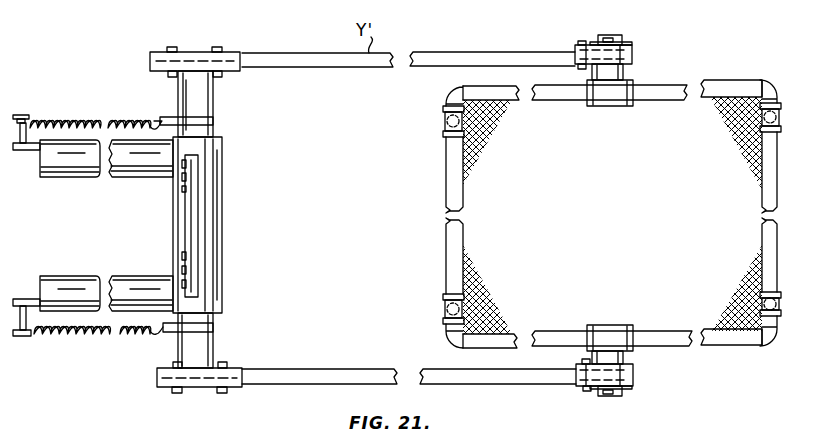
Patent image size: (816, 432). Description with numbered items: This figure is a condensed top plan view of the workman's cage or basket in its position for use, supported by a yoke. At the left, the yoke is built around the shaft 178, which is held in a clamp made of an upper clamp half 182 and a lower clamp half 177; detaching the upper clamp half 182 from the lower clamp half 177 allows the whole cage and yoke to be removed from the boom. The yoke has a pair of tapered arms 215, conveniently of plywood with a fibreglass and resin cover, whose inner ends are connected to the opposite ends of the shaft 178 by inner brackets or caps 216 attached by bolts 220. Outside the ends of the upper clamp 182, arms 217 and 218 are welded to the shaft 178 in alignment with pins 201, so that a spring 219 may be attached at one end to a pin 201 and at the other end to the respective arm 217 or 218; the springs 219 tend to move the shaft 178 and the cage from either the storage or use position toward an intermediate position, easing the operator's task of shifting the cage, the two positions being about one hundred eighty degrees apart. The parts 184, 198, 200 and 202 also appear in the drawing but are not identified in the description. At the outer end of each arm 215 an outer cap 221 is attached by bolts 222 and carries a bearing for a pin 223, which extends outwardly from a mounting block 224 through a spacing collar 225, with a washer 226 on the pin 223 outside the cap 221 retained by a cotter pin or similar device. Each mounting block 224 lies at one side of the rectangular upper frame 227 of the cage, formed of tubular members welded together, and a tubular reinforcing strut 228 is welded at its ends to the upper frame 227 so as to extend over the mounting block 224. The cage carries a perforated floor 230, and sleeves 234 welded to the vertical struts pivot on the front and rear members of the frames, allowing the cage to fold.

The lower clamp half 177 is at (177, 222).
The shaft 178 is at (214, 90).
The upper clamp half 182 is at (222, 186).
The slide member 184 is at (198, 222).
The cylinder 198 is at (152, 178).
The rod 200 is at (24, 151).
The pin 201 is at (35, 125).
The stop member 202 is at (18, 115).
The tapered arm 215 is at (322, 30).
The inner bracket or cap 216 is at (157, 380).
The arm 217 is at (214, 332).
The arm 218 is at (214, 121).
The spring 219 is at (126, 118).
The bolt 220 is at (231, 42).
The outer cap 221 is at (634, 55).
The bolt 222 is at (588, 26).
The pin 223 is at (603, 35).
The mounting block 224 is at (614, 106).
The spacing collar 225 is at (624, 72).
The washer 226 is at (631, 44).
The upper frame 227 is at (447, 202).
The reinforcing strut 228 is at (484, 92).
The perforated floor 230 is at (492, 122).
The sleeve 234 is at (443, 134).